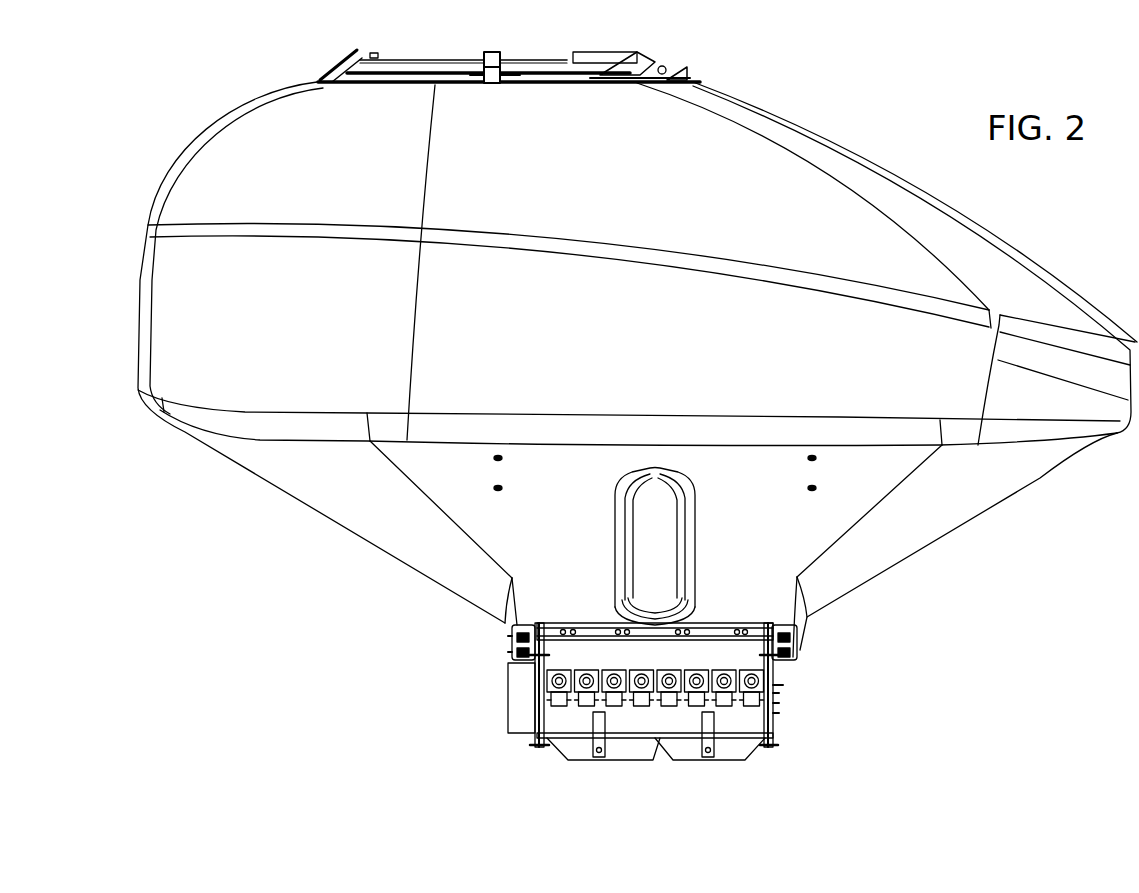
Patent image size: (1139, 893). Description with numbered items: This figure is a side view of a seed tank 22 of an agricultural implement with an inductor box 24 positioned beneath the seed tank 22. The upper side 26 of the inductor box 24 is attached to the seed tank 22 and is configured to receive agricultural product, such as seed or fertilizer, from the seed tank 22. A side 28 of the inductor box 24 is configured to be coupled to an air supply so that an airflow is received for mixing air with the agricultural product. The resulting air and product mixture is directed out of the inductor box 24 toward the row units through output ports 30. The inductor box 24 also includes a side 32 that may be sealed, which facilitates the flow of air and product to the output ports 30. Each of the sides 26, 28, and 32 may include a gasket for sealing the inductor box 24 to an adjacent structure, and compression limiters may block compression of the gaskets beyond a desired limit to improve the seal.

The seed tank 22 is at (1003, 280).
The inductor box 24 is at (693, 699).
The upper side 26 is at (520, 628).
The side 28 is at (520, 703).
The output ports 30 is at (642, 710).
The side 32 is at (773, 693).